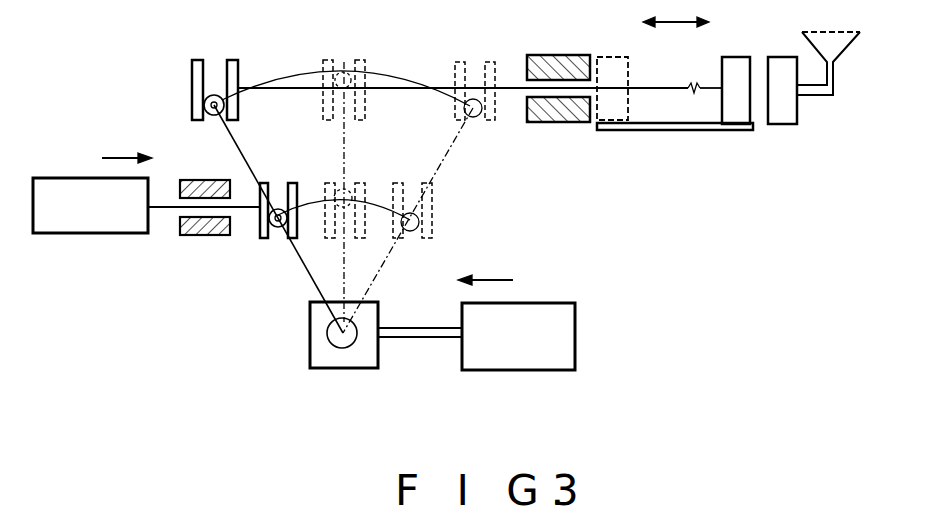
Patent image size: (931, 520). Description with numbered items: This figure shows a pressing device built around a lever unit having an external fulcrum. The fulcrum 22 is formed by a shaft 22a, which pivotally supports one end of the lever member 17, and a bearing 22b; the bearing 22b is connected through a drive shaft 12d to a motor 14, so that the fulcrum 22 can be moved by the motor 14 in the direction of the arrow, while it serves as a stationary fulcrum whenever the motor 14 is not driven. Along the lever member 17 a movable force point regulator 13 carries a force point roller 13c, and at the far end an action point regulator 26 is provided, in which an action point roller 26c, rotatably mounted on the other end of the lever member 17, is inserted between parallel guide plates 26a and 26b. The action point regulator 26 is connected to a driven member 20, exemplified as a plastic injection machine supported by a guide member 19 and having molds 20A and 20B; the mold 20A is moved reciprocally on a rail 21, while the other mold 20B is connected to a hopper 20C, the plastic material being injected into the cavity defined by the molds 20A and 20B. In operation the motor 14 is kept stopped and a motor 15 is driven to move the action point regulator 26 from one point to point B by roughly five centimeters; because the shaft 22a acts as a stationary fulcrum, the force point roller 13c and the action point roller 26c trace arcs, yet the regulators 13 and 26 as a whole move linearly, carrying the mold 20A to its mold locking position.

The drive shaft 12d is at (421, 328).
The movable force point regulator 13 is at (339, 221).
The force point roller 13c is at (279, 229).
The motor 14 is at (575, 335).
The motor 15 is at (68, 182).
The lever member 17 is at (247, 163).
The guide member 19 is at (559, 55).
The driven member 20 is at (772, 50).
The mold 20A is at (612, 112).
The mold 20B is at (783, 112).
The hopper 20C is at (847, 46).
The rail 21 is at (675, 130).
The fulcrum 22 is at (344, 358).
The shaft 22a is at (342, 343).
The bearing 22b is at (378, 365).
The action point regulator 26 is at (210, 91).
The guide plate 26a is at (197, 60).
The guide plate 26b is at (232, 60).
The action point roller 26c is at (213, 116).
The point B is at (475, 79).